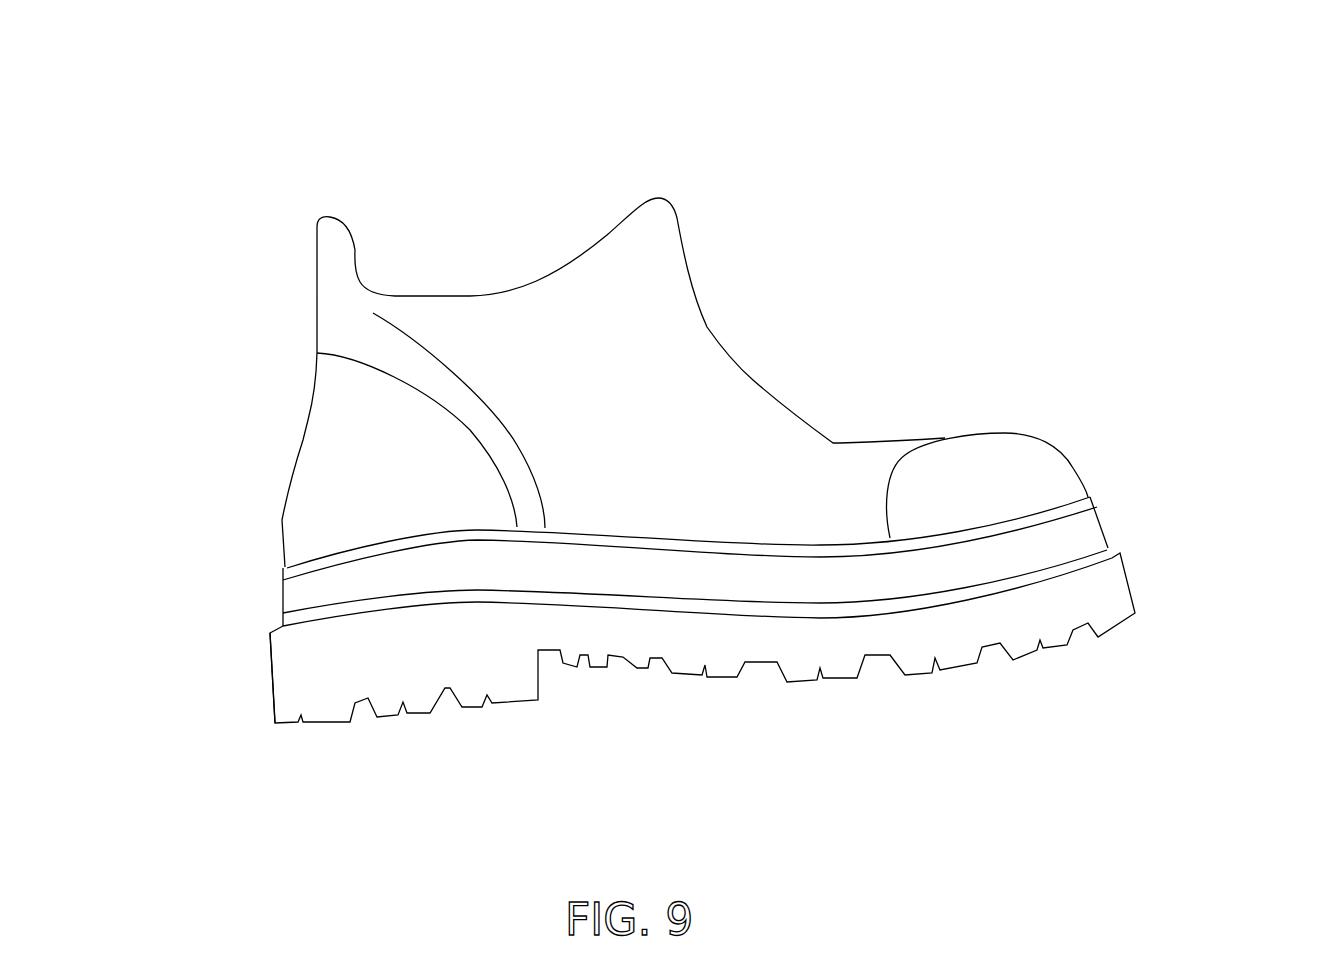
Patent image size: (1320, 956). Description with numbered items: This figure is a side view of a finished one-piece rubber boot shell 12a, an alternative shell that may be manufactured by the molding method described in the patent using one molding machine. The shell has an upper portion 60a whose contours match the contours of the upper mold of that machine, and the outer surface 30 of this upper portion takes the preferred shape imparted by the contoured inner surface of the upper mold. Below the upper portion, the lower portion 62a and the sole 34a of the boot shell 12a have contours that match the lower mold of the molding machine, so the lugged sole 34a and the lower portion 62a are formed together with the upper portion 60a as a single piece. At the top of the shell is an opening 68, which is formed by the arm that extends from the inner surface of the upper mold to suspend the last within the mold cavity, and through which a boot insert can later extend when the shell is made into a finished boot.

The opening 68 is at (689, 404).
The outer surface 30 is at (335, 403).
The upper portion 60a is at (760, 447).
The boot shell 12a is at (1028, 470).
The lower portion 62a is at (302, 675).
The sole 34a is at (684, 673).